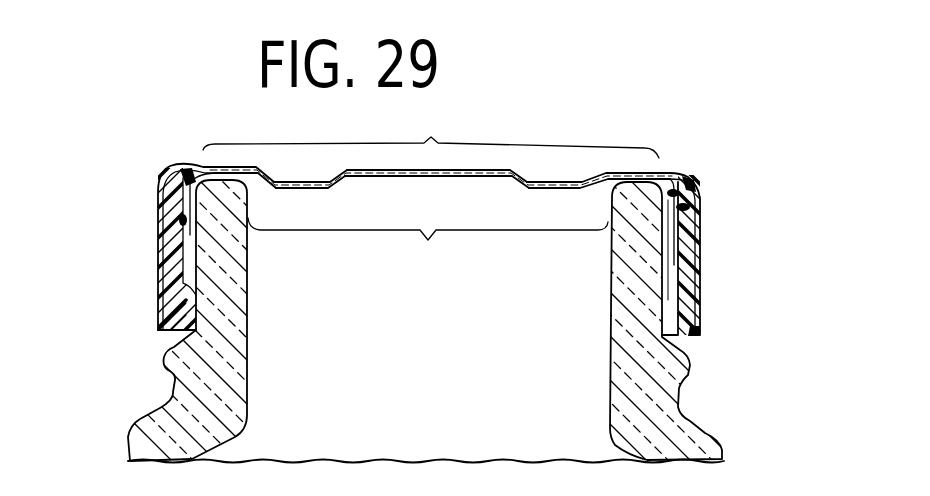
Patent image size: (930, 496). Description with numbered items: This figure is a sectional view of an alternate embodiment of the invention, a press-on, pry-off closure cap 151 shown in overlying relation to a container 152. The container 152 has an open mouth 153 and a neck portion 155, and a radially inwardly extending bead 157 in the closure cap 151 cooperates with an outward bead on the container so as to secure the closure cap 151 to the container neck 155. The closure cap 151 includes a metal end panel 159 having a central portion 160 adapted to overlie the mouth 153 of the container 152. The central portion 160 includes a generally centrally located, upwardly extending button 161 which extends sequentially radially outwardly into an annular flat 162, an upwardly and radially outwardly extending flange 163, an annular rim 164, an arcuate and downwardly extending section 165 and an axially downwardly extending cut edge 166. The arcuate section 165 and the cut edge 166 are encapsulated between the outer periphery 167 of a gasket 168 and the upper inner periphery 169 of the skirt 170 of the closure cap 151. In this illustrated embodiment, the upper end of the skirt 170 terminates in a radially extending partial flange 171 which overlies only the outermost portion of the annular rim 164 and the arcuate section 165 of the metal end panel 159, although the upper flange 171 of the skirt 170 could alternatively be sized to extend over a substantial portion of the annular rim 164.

The closure cap 151 is at (740, 187).
The container 152 is at (134, 410).
The open mouth 153 is at (428, 243).
The neck portion 155 is at (224, 268).
The radially inwardly extending bead 157 is at (170, 302).
The metal end panel 159 is at (613, 174).
The central portion 160 is at (437, 147).
The button 161 is at (410, 177).
The annular flat 162 is at (322, 185).
The flange 163 is at (260, 174).
The annular rim 164 is at (223, 172).
The arcuate section 165 is at (183, 182).
The cut edge 166 is at (182, 219).
The outer periphery 167 is at (660, 210).
The gasket 168 is at (655, 247).
The upper inner periphery 169 is at (675, 191).
The skirt 170 is at (695, 268).
The partial flange 171 is at (675, 171).